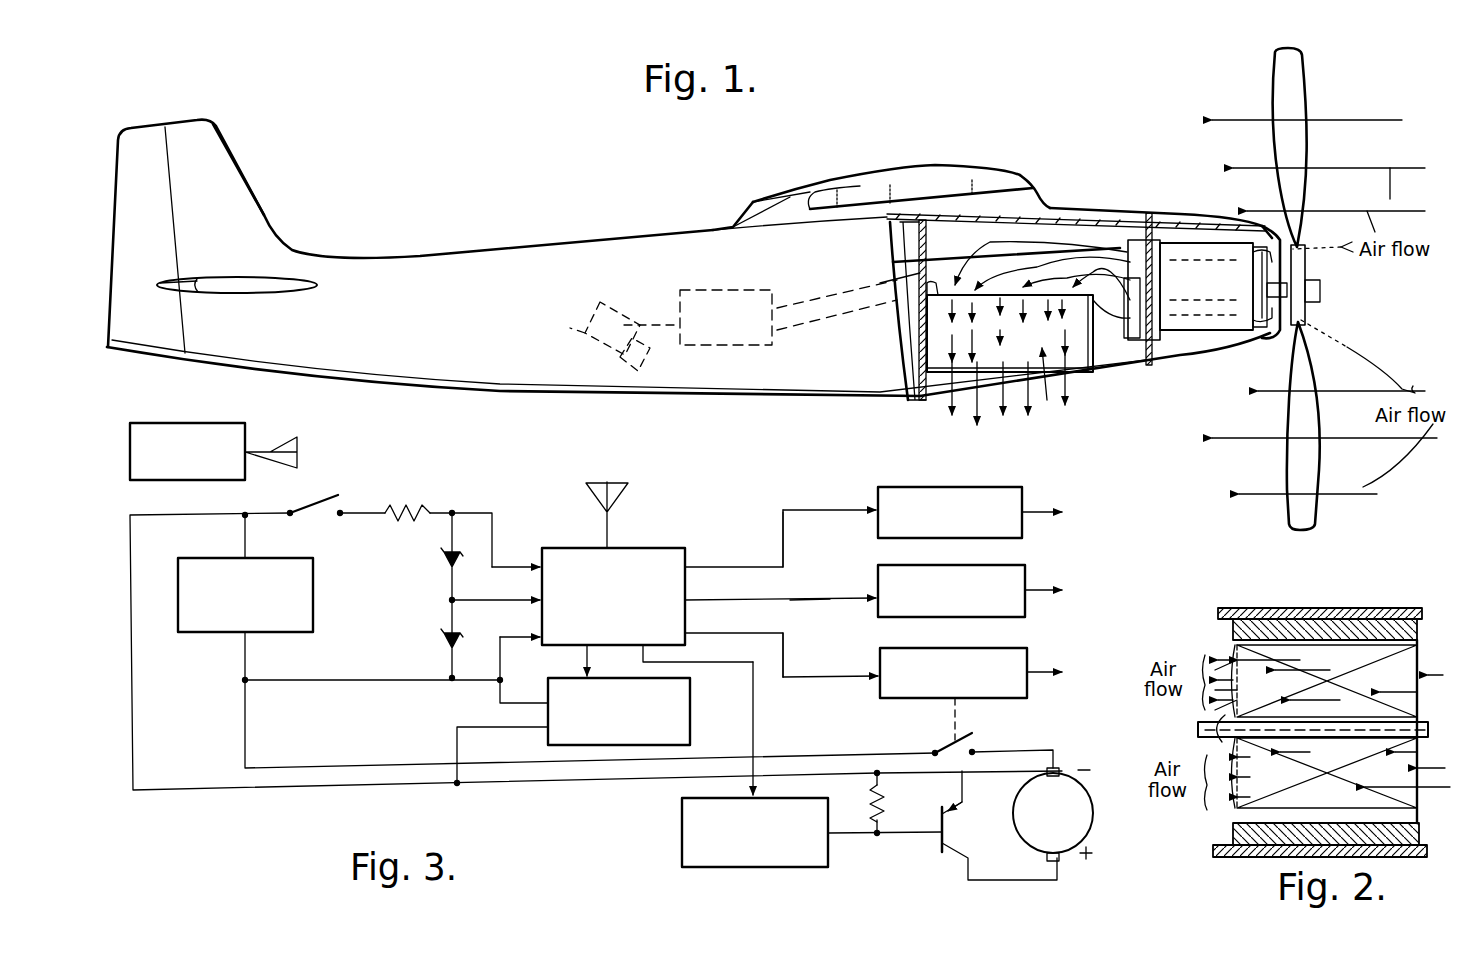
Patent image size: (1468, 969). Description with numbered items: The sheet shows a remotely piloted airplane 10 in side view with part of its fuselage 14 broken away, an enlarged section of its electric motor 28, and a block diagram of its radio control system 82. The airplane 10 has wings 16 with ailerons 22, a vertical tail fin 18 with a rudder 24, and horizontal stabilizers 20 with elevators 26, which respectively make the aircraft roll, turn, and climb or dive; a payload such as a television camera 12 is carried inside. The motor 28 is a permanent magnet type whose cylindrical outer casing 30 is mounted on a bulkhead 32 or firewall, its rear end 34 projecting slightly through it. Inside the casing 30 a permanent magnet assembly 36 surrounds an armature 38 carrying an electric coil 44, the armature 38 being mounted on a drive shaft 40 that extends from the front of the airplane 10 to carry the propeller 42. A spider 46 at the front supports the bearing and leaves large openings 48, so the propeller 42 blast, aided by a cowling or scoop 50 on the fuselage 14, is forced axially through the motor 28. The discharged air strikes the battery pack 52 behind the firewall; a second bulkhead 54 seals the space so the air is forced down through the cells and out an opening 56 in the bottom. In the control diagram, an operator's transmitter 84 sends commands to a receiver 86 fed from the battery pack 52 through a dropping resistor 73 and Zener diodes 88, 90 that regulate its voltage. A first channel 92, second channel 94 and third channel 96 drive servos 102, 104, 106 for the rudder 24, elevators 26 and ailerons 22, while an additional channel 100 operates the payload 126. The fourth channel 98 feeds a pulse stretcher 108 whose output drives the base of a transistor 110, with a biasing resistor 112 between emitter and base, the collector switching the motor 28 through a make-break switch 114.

In FIG. 1, the airplane 10 is at (585, 237).
In FIG. 1, the television camera 12 is at (568, 325).
In FIG. 1, the fuselage 14 is at (498, 392).
In FIG. 1, the wings 16 is at (1003, 182).
In FIG. 1, the vertical tail fin 18 is at (211, 131).
In FIG. 1, the horizontal stabilizers 20 is at (313, 286).
In FIG. 1, the ailerons 22 is at (793, 197).
In FIG. 1, the rudder 24 is at (133, 150).
In FIG. 1, the elevators 26 is at (174, 283).
In FIG. 1, the electric motor 28 is at (1192, 230).
In FIG. 2, the outer casing 30 is at (1388, 608).
In FIG. 1, the bulkhead 32 is at (1120, 235).
In FIG. 1, the rear end 34 is at (1136, 340).
In FIG. 2, the permanent magnet assembly 36 is at (1350, 610).
In FIG. 2, the armature 38 is at (1230, 648).
In FIG. 1, the drive shaft 40 is at (1320, 292).
In FIG. 2, the drive shaft 40 is at (1200, 731).
In FIG. 1, the propeller 42 is at (1295, 98).
In FIG. 2, the electric coil 44 is at (1398, 672).
In FIG. 1, the spider 46 is at (1255, 280).
In FIG. 1, the openings 48 is at (1258, 247).
In FIG. 1, the cowling or scoop 50 is at (1280, 333).
In FIG. 1, the battery pack 52 is at (1047, 400).
In FIG. 3, the battery pack 52 is at (313, 555).
In FIG. 1, the second bulkhead 54 is at (899, 250).
In FIG. 1, the opening 56 is at (985, 392).
In FIG. 3, the dropping resistor 73 is at (406, 508).
In FIG. 1, the radio control system 82 is at (697, 292).
In FIG. 3, the radio control system 82 is at (700, 536).
In FIG. 3, the radio transmitter 84 is at (134, 479).
In FIG. 3, the radio receiver 86 is at (562, 548).
In FIG. 3, the Zener diode 88 is at (442, 558).
In FIG. 3, the Zener diode 90 is at (442, 640).
In FIG. 3, the first channel 92 is at (802, 677).
In FIG. 3, the second channel 94 is at (804, 600).
In FIG. 3, the third channel 96 is at (815, 511).
In FIG. 3, the fourth channel 98 is at (756, 745).
In FIG. 3, the additional channel 100 is at (582, 662).
In FIG. 3, the servo 102 is at (1020, 658).
In FIG. 3, the servo 104 is at (1008, 578).
In FIG. 3, the servo 106 is at (1020, 490).
In FIG. 3, the pulse stretcher 108 is at (681, 833).
In FIG. 3, the transistor 110 is at (935, 853).
In FIG. 3, the biasing resistor 112 is at (886, 804).
In FIG. 3, the make-break switch 114 is at (949, 748).
In FIG. 3, the payload 126 is at (680, 732).